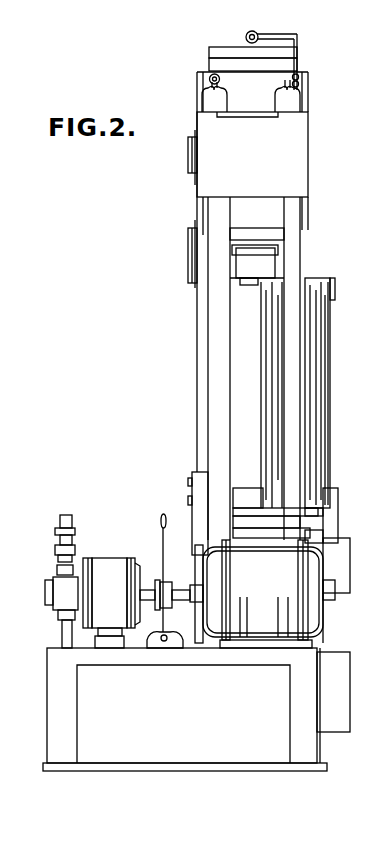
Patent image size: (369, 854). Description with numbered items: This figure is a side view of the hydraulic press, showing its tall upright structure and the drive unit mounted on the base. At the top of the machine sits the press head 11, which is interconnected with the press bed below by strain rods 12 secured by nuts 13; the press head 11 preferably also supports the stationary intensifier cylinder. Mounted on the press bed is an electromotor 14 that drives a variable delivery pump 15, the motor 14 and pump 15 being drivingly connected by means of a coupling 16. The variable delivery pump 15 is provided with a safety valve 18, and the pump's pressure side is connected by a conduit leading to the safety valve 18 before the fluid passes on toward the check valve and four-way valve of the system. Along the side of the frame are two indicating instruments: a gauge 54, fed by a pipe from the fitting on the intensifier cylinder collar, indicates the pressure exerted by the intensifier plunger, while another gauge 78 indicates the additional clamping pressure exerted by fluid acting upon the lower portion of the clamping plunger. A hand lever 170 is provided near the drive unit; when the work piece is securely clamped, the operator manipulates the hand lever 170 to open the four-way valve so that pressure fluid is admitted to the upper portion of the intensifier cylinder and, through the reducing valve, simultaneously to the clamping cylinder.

The press head 11 is at (266, 160).
The strain rods 12 is at (290, 212).
The nuts 13 is at (275, 100).
The electromotor 14 is at (270, 579).
The variable delivery pump 15 is at (113, 566).
The coupling 16 is at (168, 581).
The safety valve 18 is at (58, 520).
The gauge 54 is at (188, 251).
The gauge 78 is at (190, 164).
The hand lever 170 is at (163, 514).